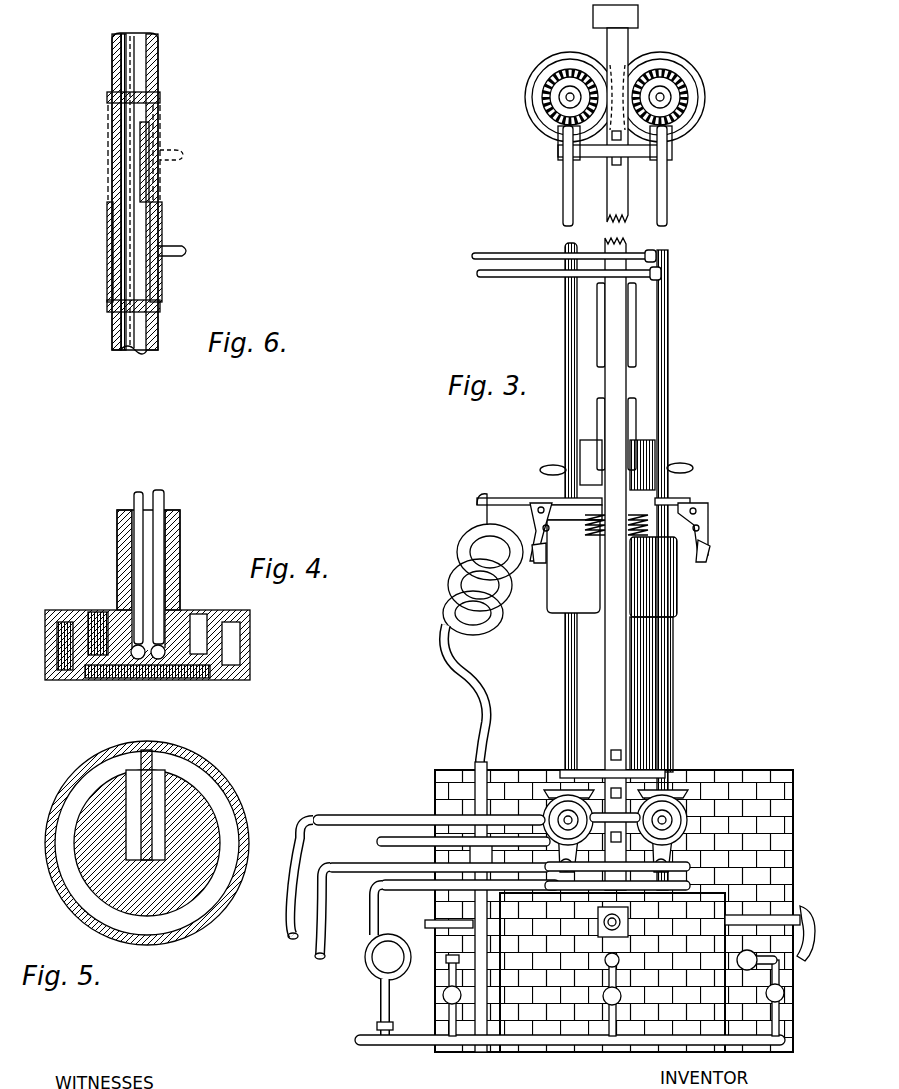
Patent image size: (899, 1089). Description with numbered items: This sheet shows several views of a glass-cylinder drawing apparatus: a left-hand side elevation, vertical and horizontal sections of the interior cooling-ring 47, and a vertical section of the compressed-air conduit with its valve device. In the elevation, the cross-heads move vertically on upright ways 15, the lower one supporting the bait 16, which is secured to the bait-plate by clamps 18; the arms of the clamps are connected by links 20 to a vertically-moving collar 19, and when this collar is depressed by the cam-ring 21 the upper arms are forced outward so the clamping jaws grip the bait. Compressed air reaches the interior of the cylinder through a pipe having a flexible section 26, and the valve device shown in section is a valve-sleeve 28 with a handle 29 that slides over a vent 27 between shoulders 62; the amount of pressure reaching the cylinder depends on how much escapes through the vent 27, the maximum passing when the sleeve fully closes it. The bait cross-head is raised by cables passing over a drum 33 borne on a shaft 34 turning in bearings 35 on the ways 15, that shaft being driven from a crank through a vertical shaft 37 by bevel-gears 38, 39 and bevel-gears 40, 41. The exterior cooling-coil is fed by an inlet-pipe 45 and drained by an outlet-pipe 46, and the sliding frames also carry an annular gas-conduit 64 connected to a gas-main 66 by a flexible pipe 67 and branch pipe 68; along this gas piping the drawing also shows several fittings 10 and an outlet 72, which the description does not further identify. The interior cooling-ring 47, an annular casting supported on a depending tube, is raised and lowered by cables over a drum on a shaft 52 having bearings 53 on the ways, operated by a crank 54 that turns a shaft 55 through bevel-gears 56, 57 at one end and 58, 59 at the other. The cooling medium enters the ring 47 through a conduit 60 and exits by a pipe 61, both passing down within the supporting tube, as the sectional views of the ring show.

In FIG. 3, the valve 10 is at (447, 990).
In FIG. 3, the upright ways 15 is at (622, 386).
In FIG. 3, the bait 16 is at (583, 635).
In FIG. 3, the clamps 18 is at (546, 562).
In FIG. 3, the collar 19 is at (670, 488).
In FIG. 3, the links 20 is at (545, 511).
In FIG. 3, the cam-ring 21 is at (585, 462).
In FIG. 3, the flexible section 26 is at (446, 640).
In FIG. 6, the vent 27 is at (113, 158).
In FIG. 6, the valve-sleeve 28 is at (107, 280).
In FIG. 6, the handle 29 is at (190, 253).
In FIG. 3, the drum 33 is at (703, 90).
In FIG. 3, the shaft 34 is at (665, 93).
In FIG. 3, the bearings 35 is at (630, 62).
In FIG. 3, the vertical shaft 37 is at (690, 292).
In FIG. 3, the bevel-gear 38 is at (690, 790).
In FIG. 3, the bevel-gear 39 is at (681, 812).
In FIG. 3, the bevel-gear 40 is at (682, 118).
In FIG. 3, the bevel-gear 41 is at (683, 98).
In FIG. 3, the inlet-pipe 45 is at (322, 960).
In FIG. 3, the outlet-pipe 46 is at (298, 935).
In FIG. 4, the cooling-ring 47 is at (235, 658).
In FIG. 5, the cooling-ring 47 is at (213, 803).
In FIG. 3, the shaft 52 is at (575, 98).
In FIG. 3, the bearings 53 is at (604, 62).
In FIG. 3, the crank 54 is at (520, 818).
In FIG. 3, the shaft 55 is at (566, 326).
In FIG. 3, the bevel-gear 56 is at (548, 795).
In FIG. 3, the bevel-gear 57 is at (556, 788).
In FIG. 3, the bevel-gear 58 is at (563, 130).
In FIG. 3, the bevel-gear 59 is at (575, 95).
In FIG. 4, the conduit 60 is at (166, 496).
In FIG. 3, the conduit 60 is at (490, 278).
In FIG. 4, the pipe 61 is at (133, 497).
In FIG. 3, the pipe 61 is at (475, 256).
In FIG. 6, the shoulders 62 is at (160, 97).
In FIG. 3, the annular gas-conduit 64 is at (685, 878).
In FIG. 3, the gas-main 66 is at (357, 1040).
In FIG. 3, the flexible pipe 67 is at (378, 990).
In FIG. 3, the branch pipe 68 is at (428, 940).
In FIG. 3, the burner 72 is at (787, 914).